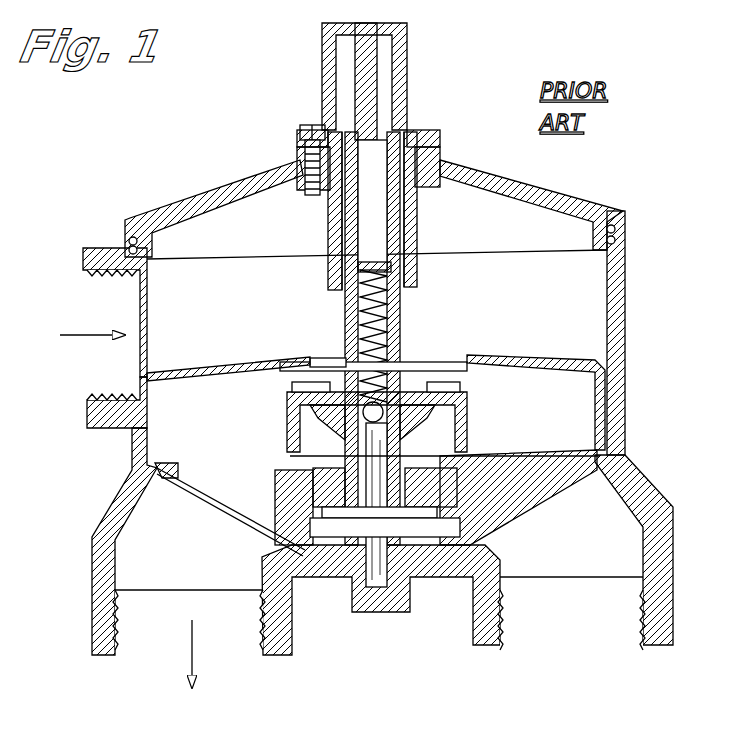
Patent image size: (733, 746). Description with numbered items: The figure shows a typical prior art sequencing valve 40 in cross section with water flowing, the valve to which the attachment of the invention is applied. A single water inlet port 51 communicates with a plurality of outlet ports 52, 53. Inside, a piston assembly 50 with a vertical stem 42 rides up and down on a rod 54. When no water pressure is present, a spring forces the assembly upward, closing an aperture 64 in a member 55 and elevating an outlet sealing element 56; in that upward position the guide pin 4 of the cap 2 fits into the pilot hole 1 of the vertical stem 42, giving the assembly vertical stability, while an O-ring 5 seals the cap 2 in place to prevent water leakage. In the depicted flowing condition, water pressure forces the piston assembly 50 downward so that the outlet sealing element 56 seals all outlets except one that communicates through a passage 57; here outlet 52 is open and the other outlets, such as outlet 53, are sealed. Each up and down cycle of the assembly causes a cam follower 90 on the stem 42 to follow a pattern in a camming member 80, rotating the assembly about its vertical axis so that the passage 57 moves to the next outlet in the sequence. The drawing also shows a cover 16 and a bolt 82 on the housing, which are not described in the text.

The pilot hole 1 is at (373, 148).
The cap 2 is at (407, 35).
The guide pin 4 is at (372, 75).
The O-ring 5 is at (396, 134).
The cover 16 is at (272, 174).
The sequencing valve 40 is at (630, 276).
The vertical stem 42 is at (395, 210).
The piston assembly 50 is at (474, 432).
The water inlet port 51 is at (96, 378).
The outlet port 52 is at (254, 642).
The outlet port 53 is at (626, 628).
The rod 54 is at (386, 568).
The member 55 is at (583, 360).
The outlet sealing element 56 is at (575, 452).
The passage 57 is at (182, 545).
The aperture 64 is at (438, 360).
The camming member 80 is at (443, 153).
The bolt 82 is at (312, 125).
The cam follower 90 is at (392, 265).